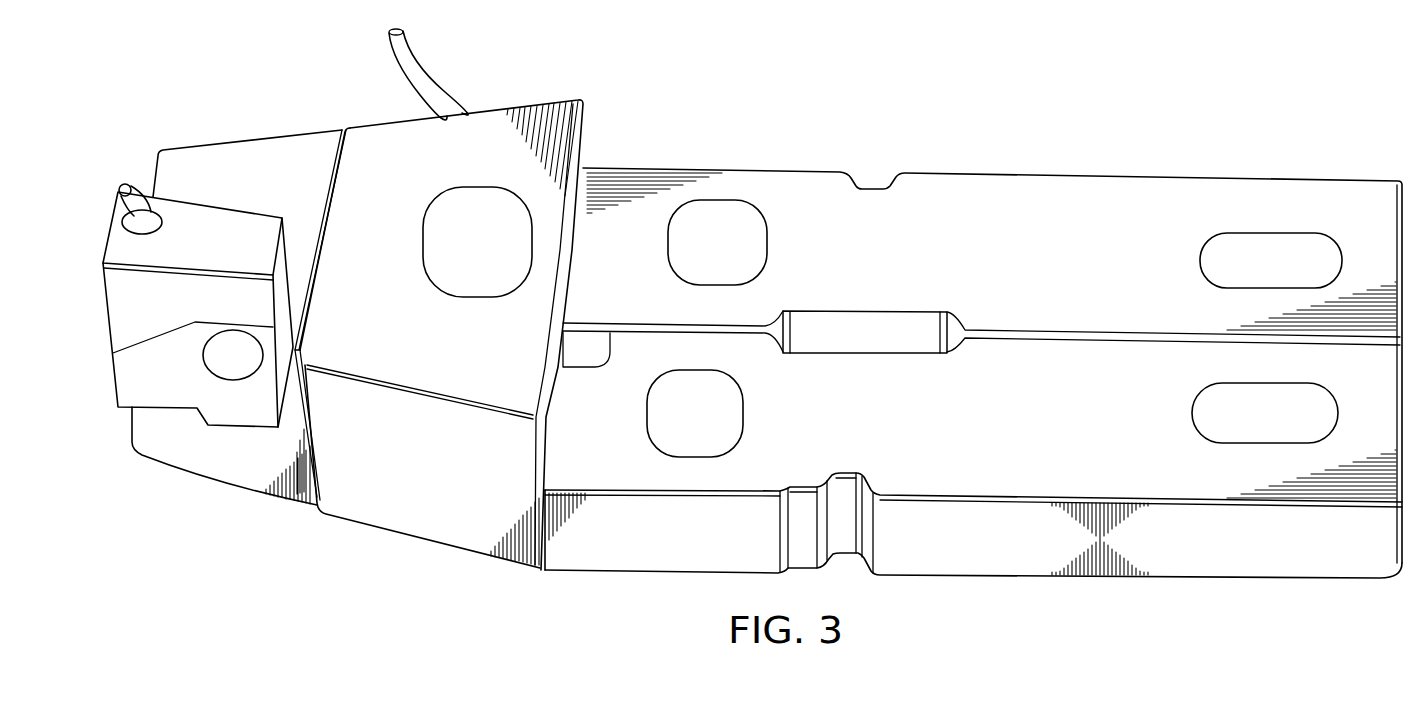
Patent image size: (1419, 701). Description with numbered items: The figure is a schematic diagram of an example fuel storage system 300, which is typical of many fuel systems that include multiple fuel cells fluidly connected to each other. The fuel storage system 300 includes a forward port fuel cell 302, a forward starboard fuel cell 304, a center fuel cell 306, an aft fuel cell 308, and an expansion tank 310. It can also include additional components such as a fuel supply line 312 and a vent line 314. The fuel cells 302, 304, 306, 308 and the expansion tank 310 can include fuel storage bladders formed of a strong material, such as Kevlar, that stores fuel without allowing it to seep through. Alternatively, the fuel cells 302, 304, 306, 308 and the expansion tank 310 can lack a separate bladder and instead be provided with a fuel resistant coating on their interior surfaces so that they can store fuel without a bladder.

The fuel storage system 300 is at (958, 78).
The forward port fuel cell 302 is at (1026, 173).
The forward starboard fuel cell 304 is at (992, 580).
The center fuel cell 306 is at (547, 108).
The aft fuel cell 308 is at (252, 137).
The expansion tank 310 is at (108, 335).
The fuel supply line 312 is at (390, 48).
The vent line 314 is at (123, 184).